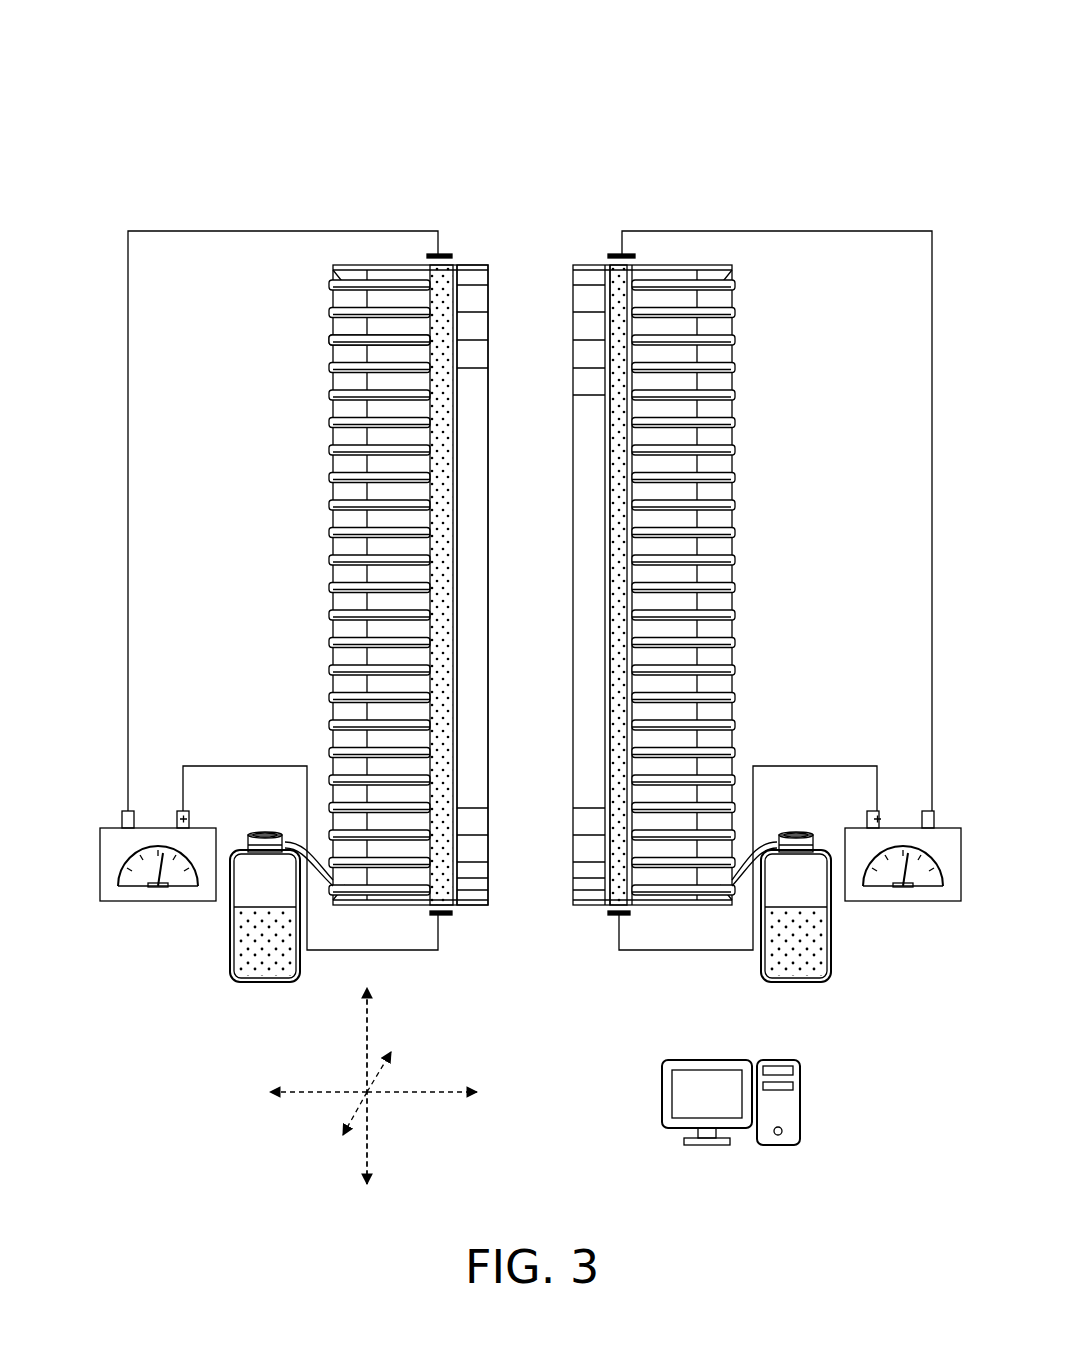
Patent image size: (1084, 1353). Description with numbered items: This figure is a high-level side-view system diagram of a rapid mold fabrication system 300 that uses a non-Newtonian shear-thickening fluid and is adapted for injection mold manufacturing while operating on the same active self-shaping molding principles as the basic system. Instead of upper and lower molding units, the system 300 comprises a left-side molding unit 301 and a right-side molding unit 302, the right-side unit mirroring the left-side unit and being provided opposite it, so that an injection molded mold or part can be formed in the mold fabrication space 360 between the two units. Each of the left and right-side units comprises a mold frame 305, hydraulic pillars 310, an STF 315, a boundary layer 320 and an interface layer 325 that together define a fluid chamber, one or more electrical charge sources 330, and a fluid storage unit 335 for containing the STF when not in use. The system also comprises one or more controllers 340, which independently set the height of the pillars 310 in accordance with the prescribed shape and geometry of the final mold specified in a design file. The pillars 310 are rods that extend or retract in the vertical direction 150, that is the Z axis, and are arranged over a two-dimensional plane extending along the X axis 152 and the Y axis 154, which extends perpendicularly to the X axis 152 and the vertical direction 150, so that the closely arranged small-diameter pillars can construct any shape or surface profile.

The rapid mold fabrication system 300 is at (757, 113).
The left-side molding unit 301 is at (342, 238).
The right-side molding unit 302 is at (795, 316).
The mold frame 305 is at (473, 265).
The hydraulic pillars 310 is at (330, 340).
The STF 315 is at (443, 652).
The boundary layer 320 is at (428, 254).
The interface layer 325 is at (455, 913).
The electrical charge source 330 is at (100, 870).
The fluid storage unit 335 is at (230, 942).
The controller 340 is at (825, 1070).
The mold fabrication space 360 is at (550, 290).
The vertical direction 150 is at (366, 1027).
The X axis 152 is at (437, 1093).
The Y axis 154 is at (350, 1113).